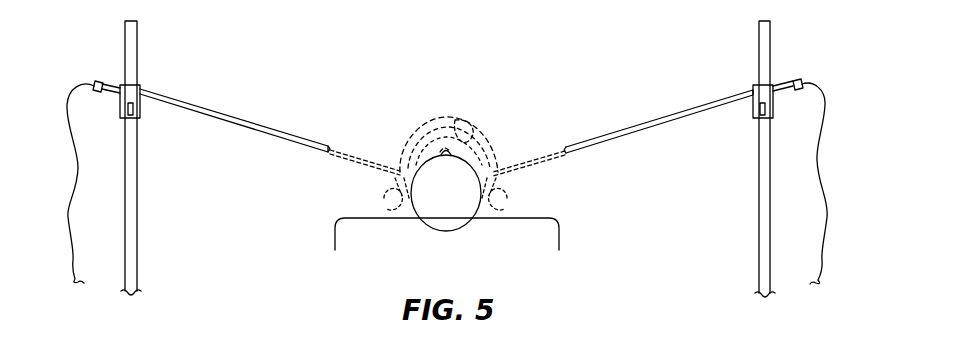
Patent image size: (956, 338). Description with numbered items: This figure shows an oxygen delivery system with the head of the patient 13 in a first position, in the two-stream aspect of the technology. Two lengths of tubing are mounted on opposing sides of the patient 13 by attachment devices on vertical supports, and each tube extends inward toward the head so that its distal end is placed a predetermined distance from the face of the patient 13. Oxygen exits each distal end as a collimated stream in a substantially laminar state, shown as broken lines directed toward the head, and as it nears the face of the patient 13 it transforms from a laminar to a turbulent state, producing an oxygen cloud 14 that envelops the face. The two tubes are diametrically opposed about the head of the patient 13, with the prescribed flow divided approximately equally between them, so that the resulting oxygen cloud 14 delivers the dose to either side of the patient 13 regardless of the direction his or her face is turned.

The patient 13 is at (428, 222).
The oxygen cloud 14 is at (455, 135).